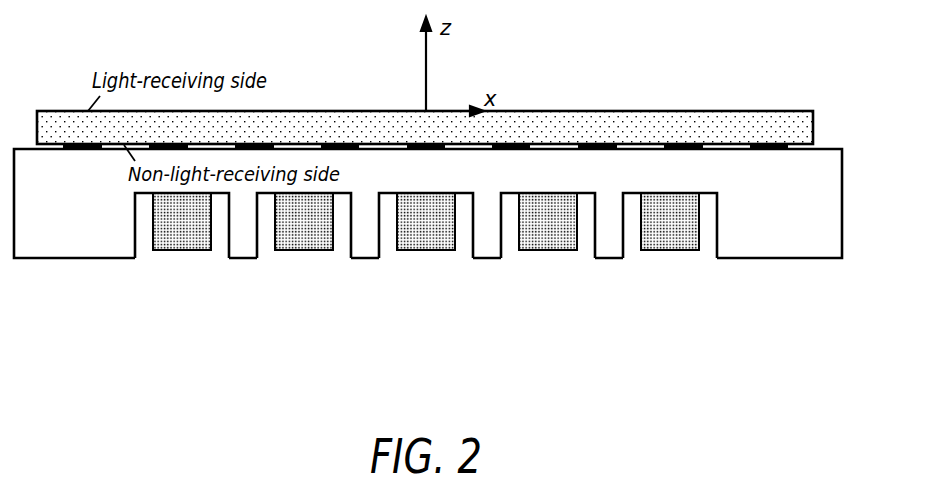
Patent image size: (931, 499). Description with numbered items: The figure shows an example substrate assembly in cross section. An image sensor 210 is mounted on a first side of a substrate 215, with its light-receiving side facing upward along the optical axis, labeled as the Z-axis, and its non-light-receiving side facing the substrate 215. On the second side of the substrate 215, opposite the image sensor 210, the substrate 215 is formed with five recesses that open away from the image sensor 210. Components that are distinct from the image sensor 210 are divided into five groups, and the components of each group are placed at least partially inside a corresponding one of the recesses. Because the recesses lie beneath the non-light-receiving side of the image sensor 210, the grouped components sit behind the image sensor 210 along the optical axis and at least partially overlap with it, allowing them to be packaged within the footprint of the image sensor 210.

The image sensor 210 is at (570, 111).
The substrate 215 is at (812, 185).